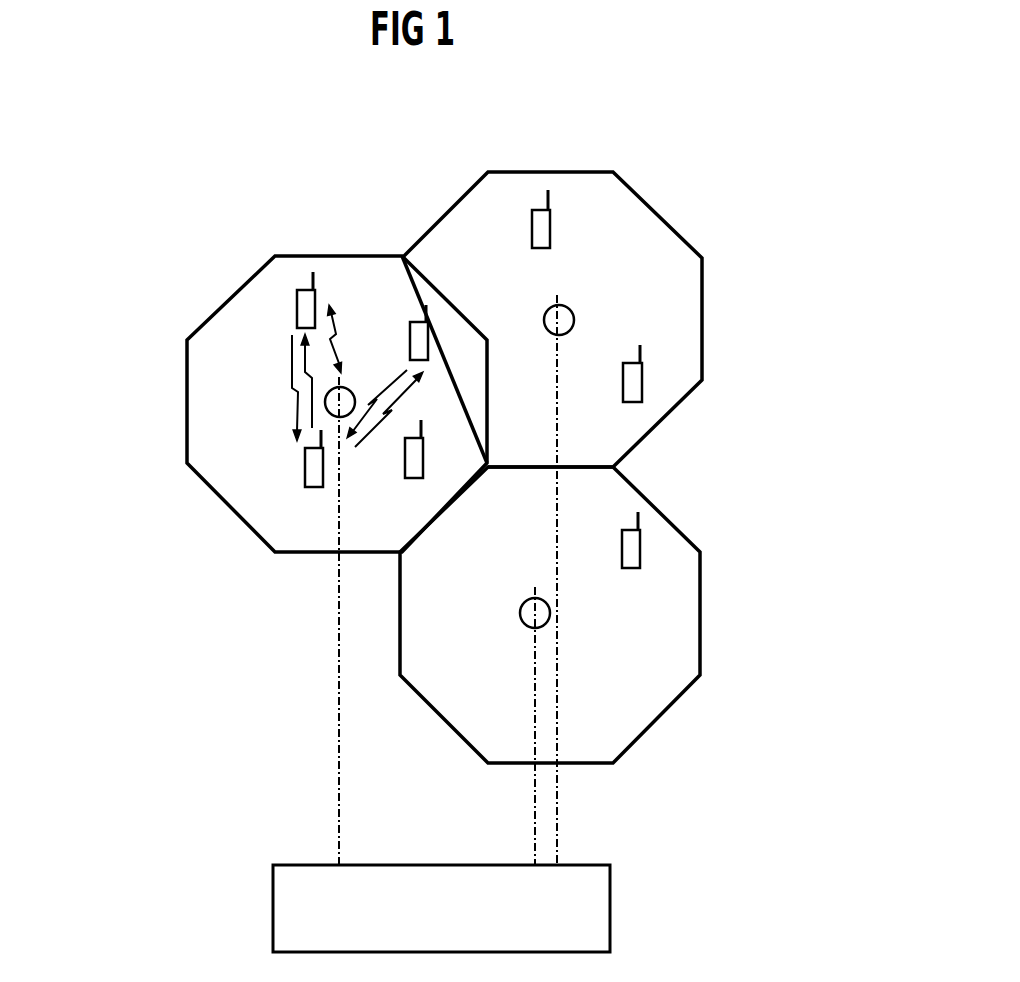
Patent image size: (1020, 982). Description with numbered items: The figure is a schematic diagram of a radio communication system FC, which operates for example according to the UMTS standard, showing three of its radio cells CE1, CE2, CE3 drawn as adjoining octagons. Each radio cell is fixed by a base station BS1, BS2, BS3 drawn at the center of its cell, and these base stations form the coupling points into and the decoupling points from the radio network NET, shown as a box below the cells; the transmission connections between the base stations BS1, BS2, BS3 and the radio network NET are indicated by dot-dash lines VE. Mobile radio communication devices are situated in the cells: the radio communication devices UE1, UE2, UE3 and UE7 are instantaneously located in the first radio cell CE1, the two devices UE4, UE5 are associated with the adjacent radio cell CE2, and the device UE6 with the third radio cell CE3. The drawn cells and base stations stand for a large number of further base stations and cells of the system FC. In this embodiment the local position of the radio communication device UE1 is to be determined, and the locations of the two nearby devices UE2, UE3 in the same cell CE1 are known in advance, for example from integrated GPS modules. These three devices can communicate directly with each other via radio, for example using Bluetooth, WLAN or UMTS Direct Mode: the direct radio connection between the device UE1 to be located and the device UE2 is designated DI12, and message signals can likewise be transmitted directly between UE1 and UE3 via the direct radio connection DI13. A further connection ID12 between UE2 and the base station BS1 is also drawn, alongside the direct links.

The first radio cell CE1 is at (248, 527).
The second radio cell CE2 is at (653, 428).
The third radio cell CE3 is at (657, 717).
The first base station BS1 is at (326, 397).
The second base station BS2 is at (574, 314).
The third base station BS3 is at (527, 601).
The radio communication device to be located UE1 is at (305, 467).
The further mobile radio communication device UE2 is at (296, 308).
The further mobile radio communication device UE3 is at (410, 339).
The radio communication device UE4 is at (550, 228).
The radio communication device UE5 is at (643, 382).
The radio communication device UE6 is at (641, 549).
The radio communication device UE7 is at (413, 479).
The direct radio connection DI12 is at (280, 385).
The indirect radio link via base station ID12 is at (335, 322).
The direct radio connection DI13 is at (412, 396).
The transmission connections VE is at (336, 828).
The radio network NET is at (441, 908).
The radio communication system FC is at (213, 793).